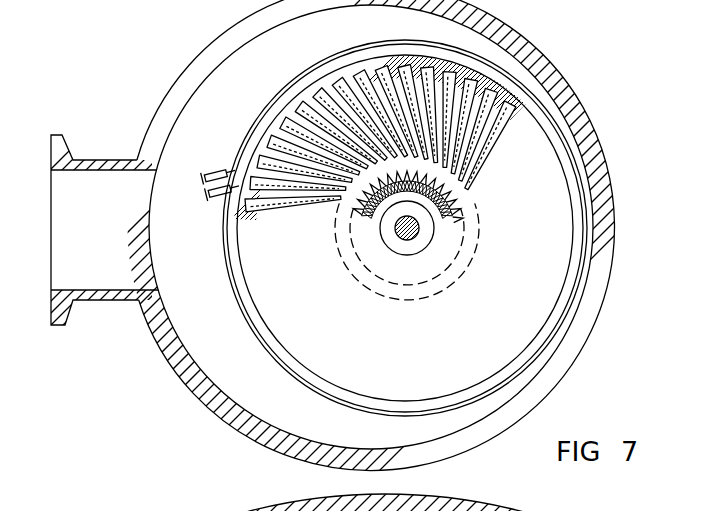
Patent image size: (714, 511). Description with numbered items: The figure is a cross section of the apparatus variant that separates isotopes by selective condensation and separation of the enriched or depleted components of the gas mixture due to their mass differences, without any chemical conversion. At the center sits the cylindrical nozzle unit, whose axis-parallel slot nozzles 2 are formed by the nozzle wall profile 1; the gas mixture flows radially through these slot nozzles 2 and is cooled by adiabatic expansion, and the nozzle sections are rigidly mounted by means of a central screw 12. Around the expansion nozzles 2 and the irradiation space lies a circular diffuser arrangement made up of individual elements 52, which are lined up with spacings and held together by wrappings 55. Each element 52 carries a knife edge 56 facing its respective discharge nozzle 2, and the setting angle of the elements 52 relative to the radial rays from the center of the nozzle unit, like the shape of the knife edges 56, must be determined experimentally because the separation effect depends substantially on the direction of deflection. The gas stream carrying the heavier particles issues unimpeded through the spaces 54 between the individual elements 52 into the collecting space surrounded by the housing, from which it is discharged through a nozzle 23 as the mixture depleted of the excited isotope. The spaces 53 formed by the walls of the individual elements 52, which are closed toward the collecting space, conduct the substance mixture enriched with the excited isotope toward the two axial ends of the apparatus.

The nozzle wall profile 1 is at (453, 204).
The slot nozzles 2 is at (458, 199).
The central screw 12 is at (405, 240).
The nozzle 23 is at (57, 134).
The individual elements 52 is at (340, 71).
The spaces 53 is at (370, 66).
The spaces 54 is at (267, 143).
The wrappings 55 is at (292, 88).
The knife edges 56 is at (352, 182).